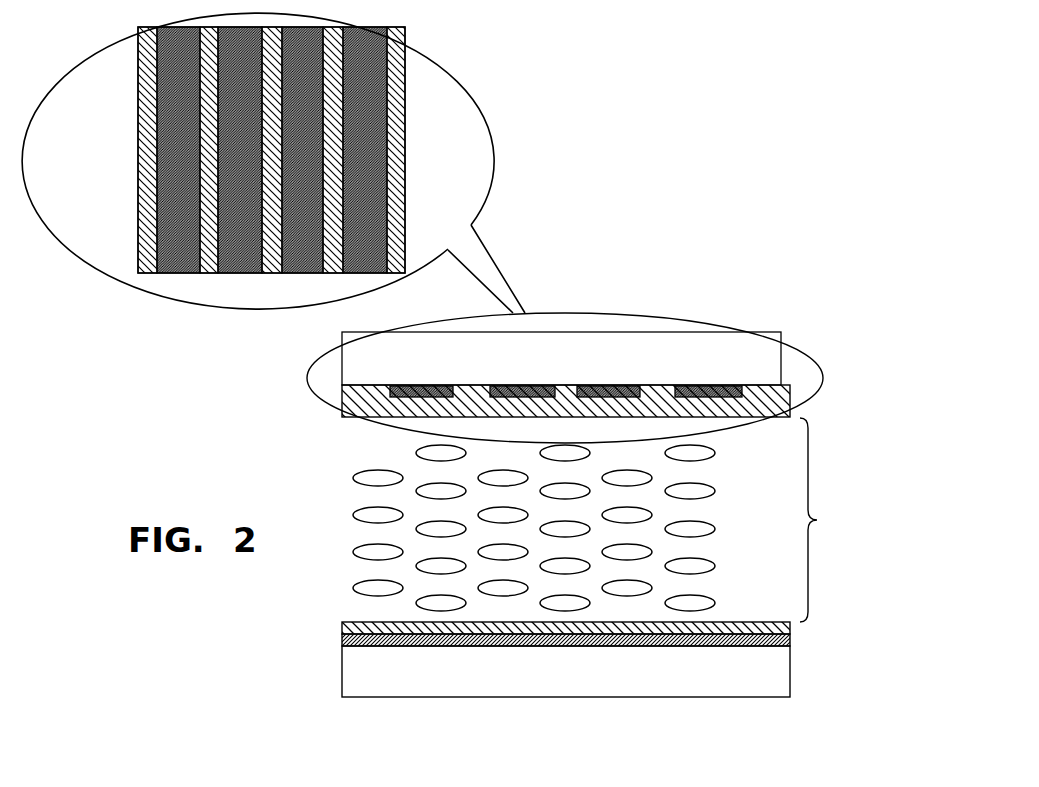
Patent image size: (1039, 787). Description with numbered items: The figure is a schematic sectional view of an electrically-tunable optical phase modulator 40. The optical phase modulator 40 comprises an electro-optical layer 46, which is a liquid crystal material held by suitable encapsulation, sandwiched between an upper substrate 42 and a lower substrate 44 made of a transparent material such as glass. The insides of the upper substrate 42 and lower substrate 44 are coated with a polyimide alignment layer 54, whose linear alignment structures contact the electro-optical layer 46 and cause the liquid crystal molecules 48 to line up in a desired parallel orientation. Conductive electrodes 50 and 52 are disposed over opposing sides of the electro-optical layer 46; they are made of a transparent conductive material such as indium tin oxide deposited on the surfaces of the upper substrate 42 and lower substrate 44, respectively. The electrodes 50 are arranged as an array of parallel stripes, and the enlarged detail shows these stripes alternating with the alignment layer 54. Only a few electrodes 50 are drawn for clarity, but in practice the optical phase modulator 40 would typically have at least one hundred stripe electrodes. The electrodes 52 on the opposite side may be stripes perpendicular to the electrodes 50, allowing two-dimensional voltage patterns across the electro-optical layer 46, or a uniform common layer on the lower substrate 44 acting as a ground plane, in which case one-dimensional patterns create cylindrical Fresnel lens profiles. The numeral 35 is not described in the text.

The light source 35 is at (886, 0).
The optical phase modulator 40 is at (863, 374).
The upper substrate 42 is at (772, 358).
The lower substrate 44 is at (782, 673).
The electro-optical layer 46 is at (827, 520).
The liquid crystal molecules 48 is at (705, 517).
The electrodes 50 is at (367, 263).
The electrodes 52 is at (347, 638).
The polyimide alignment layer 54 is at (407, 123).